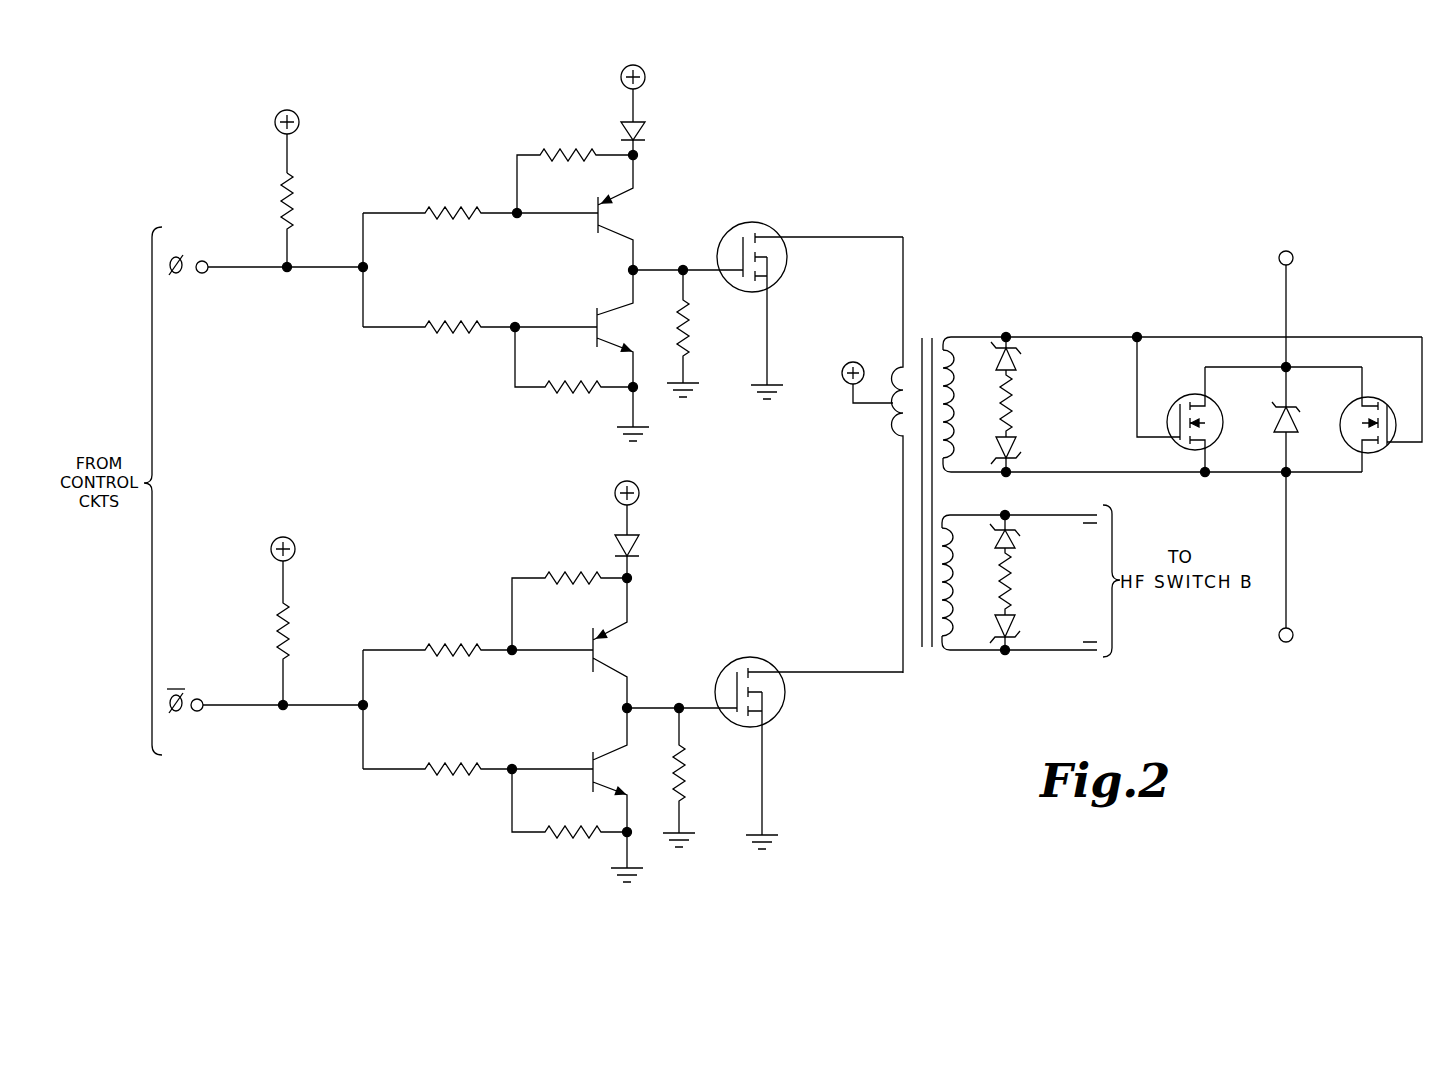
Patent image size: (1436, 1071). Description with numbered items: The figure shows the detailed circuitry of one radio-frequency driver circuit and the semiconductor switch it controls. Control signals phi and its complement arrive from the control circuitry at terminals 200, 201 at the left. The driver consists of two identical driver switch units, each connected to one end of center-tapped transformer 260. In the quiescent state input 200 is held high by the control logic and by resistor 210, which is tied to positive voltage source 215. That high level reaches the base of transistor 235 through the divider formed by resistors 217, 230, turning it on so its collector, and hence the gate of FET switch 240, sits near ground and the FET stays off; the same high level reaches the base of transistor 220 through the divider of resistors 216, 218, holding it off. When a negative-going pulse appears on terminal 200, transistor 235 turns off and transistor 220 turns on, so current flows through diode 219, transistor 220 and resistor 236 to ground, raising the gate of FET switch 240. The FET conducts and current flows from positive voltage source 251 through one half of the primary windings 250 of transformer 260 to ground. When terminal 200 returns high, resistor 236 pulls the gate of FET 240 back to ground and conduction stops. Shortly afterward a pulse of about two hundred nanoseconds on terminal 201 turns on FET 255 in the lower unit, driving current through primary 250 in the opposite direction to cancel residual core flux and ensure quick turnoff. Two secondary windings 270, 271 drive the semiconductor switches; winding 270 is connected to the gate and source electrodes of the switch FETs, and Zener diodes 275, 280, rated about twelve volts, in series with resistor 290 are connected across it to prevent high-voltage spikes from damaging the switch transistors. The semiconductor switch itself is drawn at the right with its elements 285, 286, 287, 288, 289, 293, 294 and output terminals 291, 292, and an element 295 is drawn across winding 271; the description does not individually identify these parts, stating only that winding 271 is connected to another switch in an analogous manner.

The terminal 200 is at (206, 262).
The terminal 201 is at (201, 701).
The resistor 210 is at (292, 205).
The positive voltage source 215 is at (314, 134).
The resistor 216 is at (440, 207).
The resistor 217 is at (445, 321).
The resistor 218 is at (555, 150).
The diode 219 is at (645, 134).
The transistor 220 is at (615, 218).
The resistor 230 is at (572, 395).
The transistor 235 is at (613, 331).
The resistor 236 is at (690, 338).
The FET switch 240 is at (752, 222).
The primary windings 250 is at (893, 418).
The positive voltage source 251 is at (842, 373).
The FET 255 is at (715, 686).
The transformer 260 is at (947, 678).
The secondary winding 270 is at (950, 337).
The secondary winding 271 is at (955, 653).
The Zener diode 275 is at (1020, 352).
The Zener diode 280 is at (1018, 450).
The field effect transistor 285 is at (1243, 388).
The zener diode 286 is at (1298, 400).
The field effect transistor 287 is at (1372, 455).
The conductor 288 is at (1196, 337).
The conductor 289 is at (1250, 478).
The resistor 290 is at (1013, 402).
The output terminal 291 is at (1293, 258).
The output terminal 292 is at (1288, 606).
The gate lead 293 is at (1148, 440).
The gate lead 294 is at (1410, 388).
The zener diode 295 is at (1037, 650).